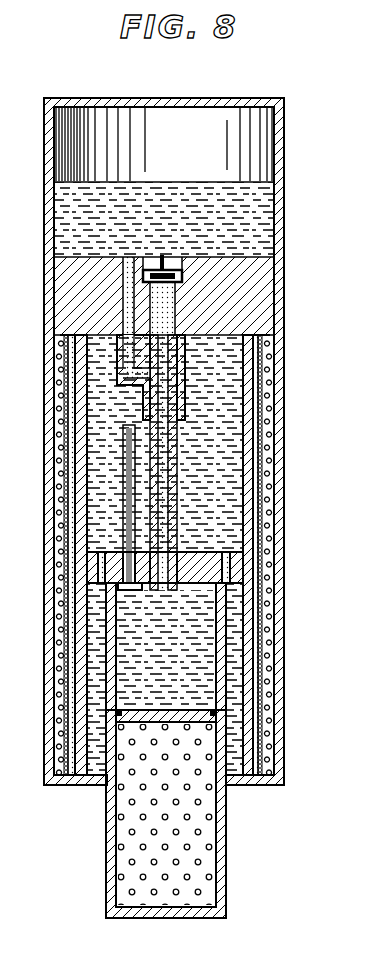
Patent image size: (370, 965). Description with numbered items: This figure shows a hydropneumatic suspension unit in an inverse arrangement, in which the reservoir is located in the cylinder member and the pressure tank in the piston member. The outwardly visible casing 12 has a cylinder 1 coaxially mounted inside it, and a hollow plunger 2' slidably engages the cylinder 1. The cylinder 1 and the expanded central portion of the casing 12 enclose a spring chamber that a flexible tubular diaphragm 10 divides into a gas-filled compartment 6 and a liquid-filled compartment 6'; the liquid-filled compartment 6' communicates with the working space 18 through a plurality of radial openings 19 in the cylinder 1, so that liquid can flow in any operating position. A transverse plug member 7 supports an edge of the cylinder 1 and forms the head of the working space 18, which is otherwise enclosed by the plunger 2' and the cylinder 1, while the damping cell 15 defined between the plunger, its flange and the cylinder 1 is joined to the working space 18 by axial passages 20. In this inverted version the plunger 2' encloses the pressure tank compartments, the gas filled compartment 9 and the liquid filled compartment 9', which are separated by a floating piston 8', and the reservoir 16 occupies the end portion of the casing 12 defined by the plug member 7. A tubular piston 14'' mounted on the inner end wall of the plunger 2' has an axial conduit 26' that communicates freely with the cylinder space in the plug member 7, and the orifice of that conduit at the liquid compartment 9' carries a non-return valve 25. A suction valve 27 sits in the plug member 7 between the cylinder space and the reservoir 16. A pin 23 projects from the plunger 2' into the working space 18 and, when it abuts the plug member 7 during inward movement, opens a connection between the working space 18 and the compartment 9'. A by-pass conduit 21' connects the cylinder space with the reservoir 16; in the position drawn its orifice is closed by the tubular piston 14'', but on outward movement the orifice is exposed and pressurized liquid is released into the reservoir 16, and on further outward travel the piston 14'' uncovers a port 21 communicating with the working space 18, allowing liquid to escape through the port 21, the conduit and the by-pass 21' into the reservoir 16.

The cylinder 1 is at (248, 472).
The plunger 2' is at (148, 814).
The gas-filled compartment 6 is at (179, 441).
The liquid-filled compartment 6' is at (41, 558).
The plug member 7 is at (262, 292).
The floating piston 8' is at (166, 737).
The gas filled compartment 9 is at (185, 814).
The liquid filled compartment 9' is at (67, 646).
The flexible diaphragm 10 is at (258, 507).
The casing 12 is at (275, 198).
The tubular piston 14'' is at (196, 462).
The damping cell 15 is at (78, 750).
The reservoir 16 is at (259, 133).
The working space 18 is at (268, 413).
The radial openings 19 is at (262, 350).
The axial passages 20 is at (255, 565).
The port 21 is at (125, 377).
The by-pass conduit 21' is at (189, 377).
The pin 23 is at (130, 486).
The non-return valve 25 is at (166, 650).
The tube outlet 26' is at (194, 530).
The suction valve 27 is at (183, 276).